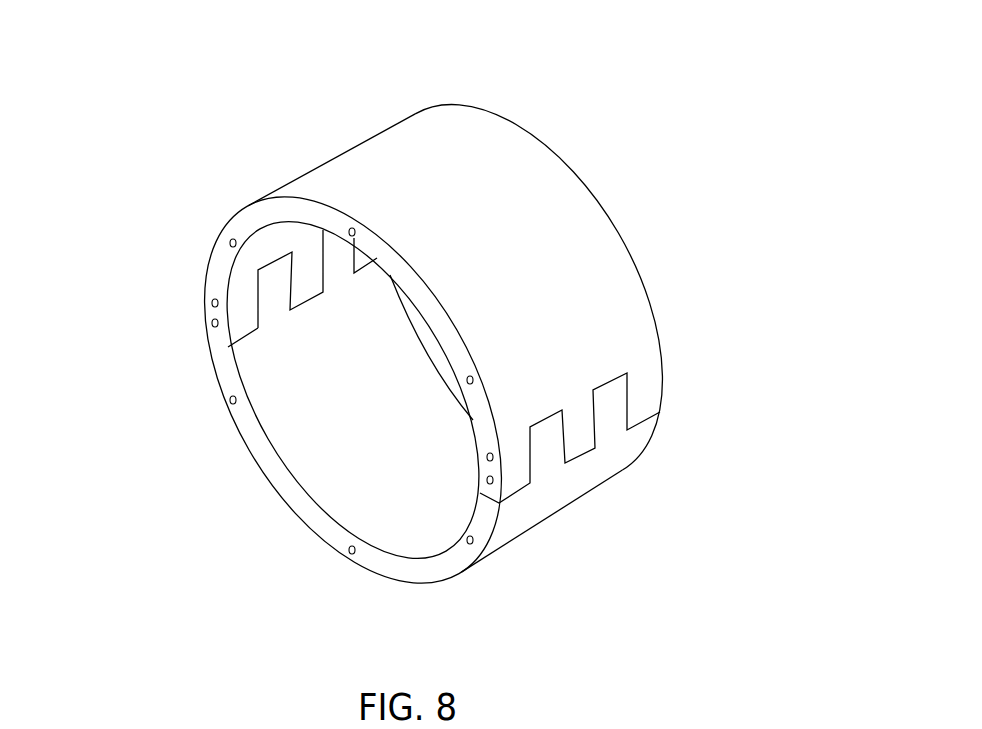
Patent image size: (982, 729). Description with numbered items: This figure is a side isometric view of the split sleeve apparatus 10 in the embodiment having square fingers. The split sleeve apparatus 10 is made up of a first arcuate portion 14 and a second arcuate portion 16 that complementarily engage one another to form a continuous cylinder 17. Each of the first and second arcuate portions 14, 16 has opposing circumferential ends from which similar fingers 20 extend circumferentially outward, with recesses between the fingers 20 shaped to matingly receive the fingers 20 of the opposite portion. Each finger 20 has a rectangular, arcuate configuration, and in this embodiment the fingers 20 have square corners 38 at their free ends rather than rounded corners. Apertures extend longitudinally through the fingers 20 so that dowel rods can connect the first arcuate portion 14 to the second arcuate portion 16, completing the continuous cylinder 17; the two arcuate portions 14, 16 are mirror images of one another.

The split sleeve apparatus 10 is at (646, 119).
The first arcuate portion 14 is at (655, 330).
The second arcuate portion 16 is at (653, 446).
The continuous cylinder 17 is at (651, 223).
The fingers 20 is at (273, 290).
The square corner 38 is at (290, 255).